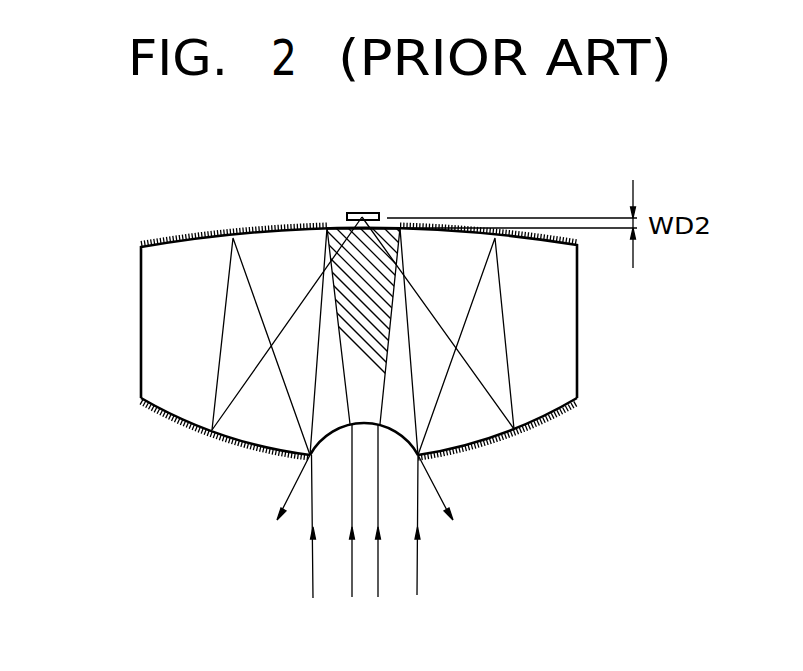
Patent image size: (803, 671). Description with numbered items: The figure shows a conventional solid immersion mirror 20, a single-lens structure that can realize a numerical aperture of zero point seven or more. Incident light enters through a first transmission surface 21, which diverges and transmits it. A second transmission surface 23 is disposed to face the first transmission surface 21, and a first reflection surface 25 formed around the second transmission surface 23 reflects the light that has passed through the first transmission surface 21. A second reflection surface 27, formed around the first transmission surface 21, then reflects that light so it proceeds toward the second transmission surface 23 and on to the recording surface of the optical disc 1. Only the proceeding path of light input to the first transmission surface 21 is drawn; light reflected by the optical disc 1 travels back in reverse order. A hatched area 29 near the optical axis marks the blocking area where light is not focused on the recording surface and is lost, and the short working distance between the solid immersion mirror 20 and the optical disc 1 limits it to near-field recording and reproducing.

The optical disc 1 is at (379, 213).
The solid immersion mirror 20 is at (130, 417).
The first transmission surface 21 is at (321, 440).
The second transmission surface 23 is at (341, 227).
The first reflection surface 25 is at (208, 237).
The second reflection surface 27 is at (212, 432).
The hatched area 29 is at (372, 330).